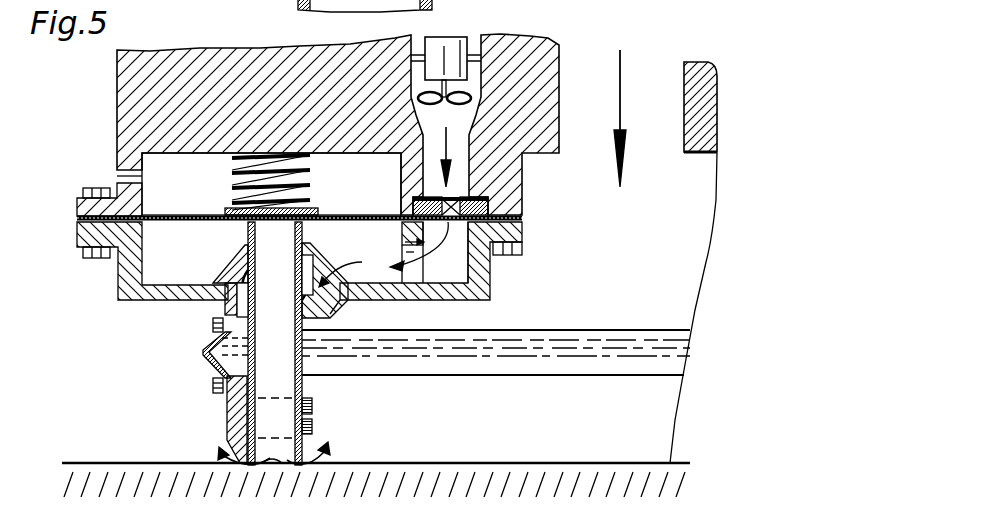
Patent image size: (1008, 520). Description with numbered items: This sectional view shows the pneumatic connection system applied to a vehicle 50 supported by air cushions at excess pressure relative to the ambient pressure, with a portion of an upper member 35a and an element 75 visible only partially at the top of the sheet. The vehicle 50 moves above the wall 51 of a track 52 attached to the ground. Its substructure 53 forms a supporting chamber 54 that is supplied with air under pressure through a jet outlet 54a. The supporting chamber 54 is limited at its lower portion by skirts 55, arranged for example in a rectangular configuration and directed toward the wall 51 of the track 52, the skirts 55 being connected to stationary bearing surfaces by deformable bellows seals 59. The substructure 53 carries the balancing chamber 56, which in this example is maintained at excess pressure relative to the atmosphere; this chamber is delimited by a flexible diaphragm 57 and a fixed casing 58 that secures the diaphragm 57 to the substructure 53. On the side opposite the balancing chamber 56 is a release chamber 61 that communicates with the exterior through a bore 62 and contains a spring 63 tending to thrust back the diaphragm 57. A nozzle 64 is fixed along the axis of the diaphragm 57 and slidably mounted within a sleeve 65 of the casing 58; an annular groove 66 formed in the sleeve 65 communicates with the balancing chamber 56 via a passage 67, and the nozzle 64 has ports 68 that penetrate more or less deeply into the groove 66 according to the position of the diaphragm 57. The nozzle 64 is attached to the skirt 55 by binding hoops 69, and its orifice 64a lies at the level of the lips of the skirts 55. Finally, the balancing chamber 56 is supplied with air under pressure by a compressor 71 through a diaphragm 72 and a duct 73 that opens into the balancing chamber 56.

The upper member (partial) 35a is at (365, 6).
The upper element (partial) 75 is at (432, 6).
The vehicle 50 is at (301, 121).
The wall 51 is at (418, 471).
The track 52 is at (541, 490).
The substructure 53 is at (243, 64).
The supporting chamber 54 is at (608, 235).
The jet outlet 54a is at (645, 110).
The skirts 55 is at (230, 421).
The balancing chamber 56 is at (165, 256).
The flexible diaphragm 57 is at (338, 217).
The fixed casing 58 is at (479, 292).
The deformable bellows seals 59 is at (204, 352).
The release chamber 61 is at (170, 168).
The bore 62 is at (124, 176).
The spring 63 is at (314, 170).
The nozzle 64 is at (305, 384).
The orifice 64a is at (273, 466).
The sleeve 65 is at (243, 250).
The groove 66 is at (238, 306).
The passage 67 is at (327, 273).
The ports 68 is at (250, 292).
The binding hoops 69 is at (313, 410).
The compressor 71 is at (444, 56).
The diaphragm 72 is at (470, 204).
The duct 73 is at (460, 262).